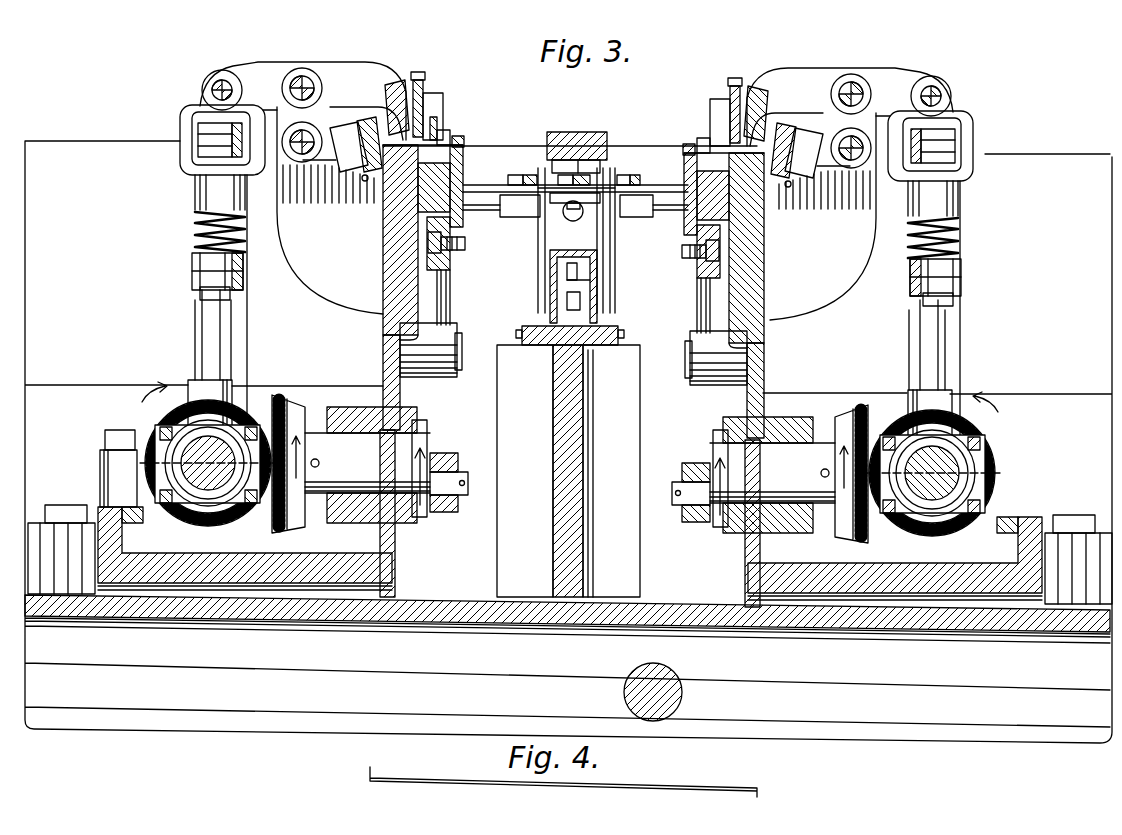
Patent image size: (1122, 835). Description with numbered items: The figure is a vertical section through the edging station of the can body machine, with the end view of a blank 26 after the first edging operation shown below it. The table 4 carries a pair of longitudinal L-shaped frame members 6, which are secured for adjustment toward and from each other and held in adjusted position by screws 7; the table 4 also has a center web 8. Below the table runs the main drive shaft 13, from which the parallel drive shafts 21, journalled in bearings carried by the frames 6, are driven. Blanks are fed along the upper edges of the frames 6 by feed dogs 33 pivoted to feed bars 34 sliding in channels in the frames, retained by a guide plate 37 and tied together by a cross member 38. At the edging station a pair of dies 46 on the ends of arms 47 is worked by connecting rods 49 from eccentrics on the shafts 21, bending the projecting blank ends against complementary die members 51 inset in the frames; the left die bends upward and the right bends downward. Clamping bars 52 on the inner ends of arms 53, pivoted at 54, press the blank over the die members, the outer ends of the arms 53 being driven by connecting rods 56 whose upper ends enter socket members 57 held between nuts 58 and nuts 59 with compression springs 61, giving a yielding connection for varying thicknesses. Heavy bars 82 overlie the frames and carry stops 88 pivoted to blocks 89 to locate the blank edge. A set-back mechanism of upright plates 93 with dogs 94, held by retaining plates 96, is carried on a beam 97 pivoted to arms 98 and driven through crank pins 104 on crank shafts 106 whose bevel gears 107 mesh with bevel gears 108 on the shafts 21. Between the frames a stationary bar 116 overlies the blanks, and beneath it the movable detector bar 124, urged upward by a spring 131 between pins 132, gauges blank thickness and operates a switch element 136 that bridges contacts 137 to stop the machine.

In FIG. 3, the table 4 is at (490, 622).
In FIG. 3, the frame members 6 is at (396, 563).
In FIG. 3, the screws 7 is at (1065, 520).
In FIG. 3, the center web 8 is at (583, 444).
In FIG. 3, the main drive shaft 13 is at (683, 696).
In FIG. 3, the drive shafts 21 is at (200, 488).
In FIG. 3, the rod 26 is at (522, 183).
In FIG. 4, the rod 26 is at (490, 784).
In FIG. 3, the feed dogs 33 is at (448, 136).
In FIG. 3, the feed bars 34 is at (384, 215).
In FIG. 3, the guide plate 37 is at (464, 162).
In FIG. 3, the cross member 38 is at (500, 190).
In FIG. 3, the dies 46 is at (345, 166).
In FIG. 3, the arms 47 is at (345, 130).
In FIG. 3, the connecting rods 49 is at (248, 336).
In FIG. 3, the die members 51 is at (362, 181).
In FIG. 3, the clamping bars 52 is at (388, 95).
In FIG. 3, the arms 53 is at (346, 76).
In FIG. 3, the pivot 54 is at (302, 74).
In FIG. 3, the connecting rods 56 is at (202, 348).
In FIG. 3, the socket members 57 is at (975, 165).
In FIG. 3, the nuts 58 is at (198, 137).
In FIG. 3, the nuts 59 is at (962, 284).
In FIG. 3, the compression springs 61 is at (195, 238).
In FIG. 3, the bars 82 is at (421, 95).
In FIG. 3, the stops 88 is at (438, 122).
In FIG. 3, the blocks 89 is at (440, 100).
In FIG. 3, the plates 93 is at (465, 180).
In FIG. 3, the dogs 94 is at (466, 142).
In FIG. 3, the retaining plates 96 is at (478, 212).
In FIG. 3, the beam 97 is at (451, 260).
In FIG. 3, the arms 98 is at (310, 290).
In FIG. 3, the crank pins 104 is at (450, 462).
In FIG. 3, the crank shafts 106 is at (385, 466).
In FIG. 3, the bevel gears 107 is at (292, 410).
In FIG. 3, the bevel gears 108 is at (265, 395).
In FIG. 3, the stationary bar 116 is at (600, 129).
In FIG. 3, the detector bar 124 is at (632, 175).
In FIG. 3, the spring 131 is at (575, 222).
In FIG. 3, the pins 132 is at (560, 215).
In FIG. 3, the switch element 136 is at (584, 298).
In FIG. 3, the contacts 137 is at (582, 279).